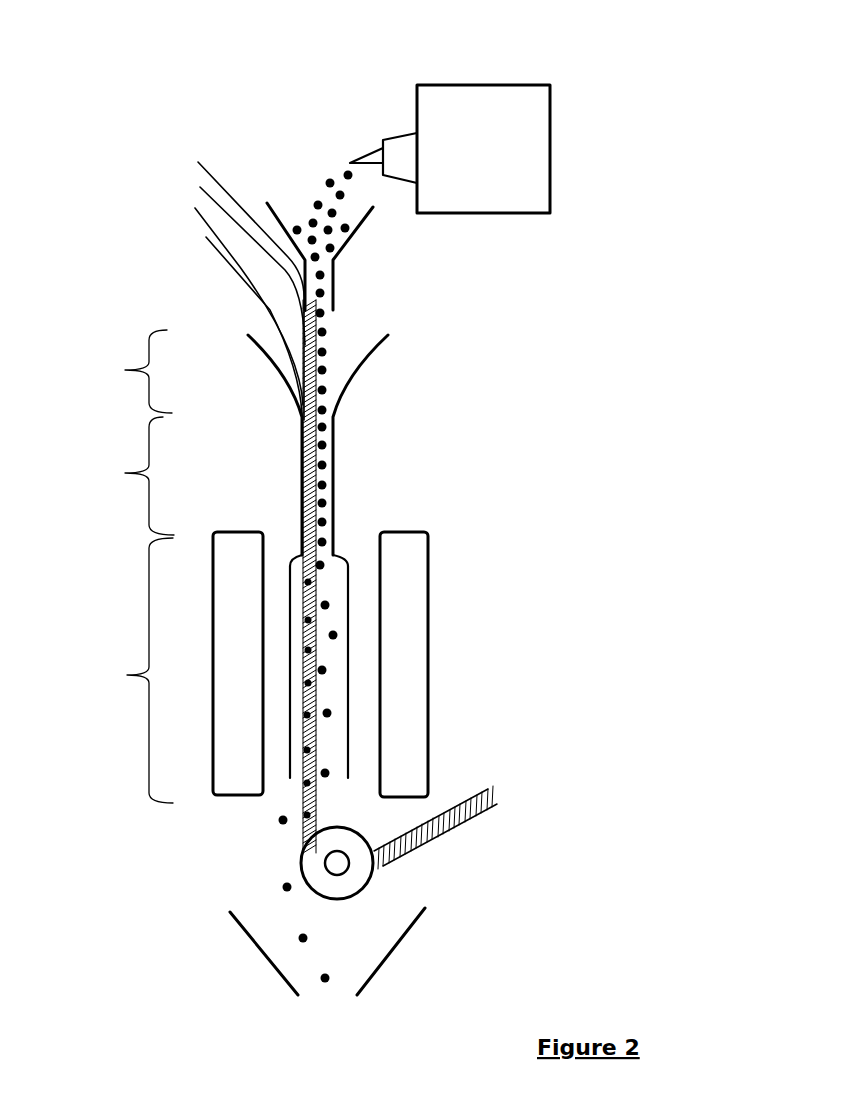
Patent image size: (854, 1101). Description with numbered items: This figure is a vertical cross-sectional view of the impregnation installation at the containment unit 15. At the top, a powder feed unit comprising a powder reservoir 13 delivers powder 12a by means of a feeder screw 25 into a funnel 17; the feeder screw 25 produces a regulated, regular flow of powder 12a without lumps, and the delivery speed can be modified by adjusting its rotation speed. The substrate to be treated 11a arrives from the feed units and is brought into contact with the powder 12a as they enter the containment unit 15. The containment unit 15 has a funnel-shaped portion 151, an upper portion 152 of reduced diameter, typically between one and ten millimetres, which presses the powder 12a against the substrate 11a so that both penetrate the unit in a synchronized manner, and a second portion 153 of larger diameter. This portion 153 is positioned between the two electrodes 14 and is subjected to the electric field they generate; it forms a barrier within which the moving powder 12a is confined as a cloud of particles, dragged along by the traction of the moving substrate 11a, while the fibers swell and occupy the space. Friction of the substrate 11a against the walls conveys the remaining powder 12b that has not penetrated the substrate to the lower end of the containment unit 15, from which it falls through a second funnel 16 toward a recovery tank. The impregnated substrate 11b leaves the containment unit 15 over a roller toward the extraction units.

The substrate to be treated 11a is at (196, 208).
The impregnated substrate 11b is at (483, 793).
The powder 12a is at (332, 165).
The remaining powder 12b is at (298, 938).
The powder reservoir 13 is at (527, 127).
The electrodes 14 is at (415, 595).
The containment unit 15 is at (383, 358).
The second funnel 16 is at (425, 930).
The funnel 17 is at (355, 238).
The feeder screw 25 is at (363, 147).
The funnel-shaped portion 151 is at (122, 371).
The upper portion 152 is at (122, 476).
The second portion 153 is at (125, 670).